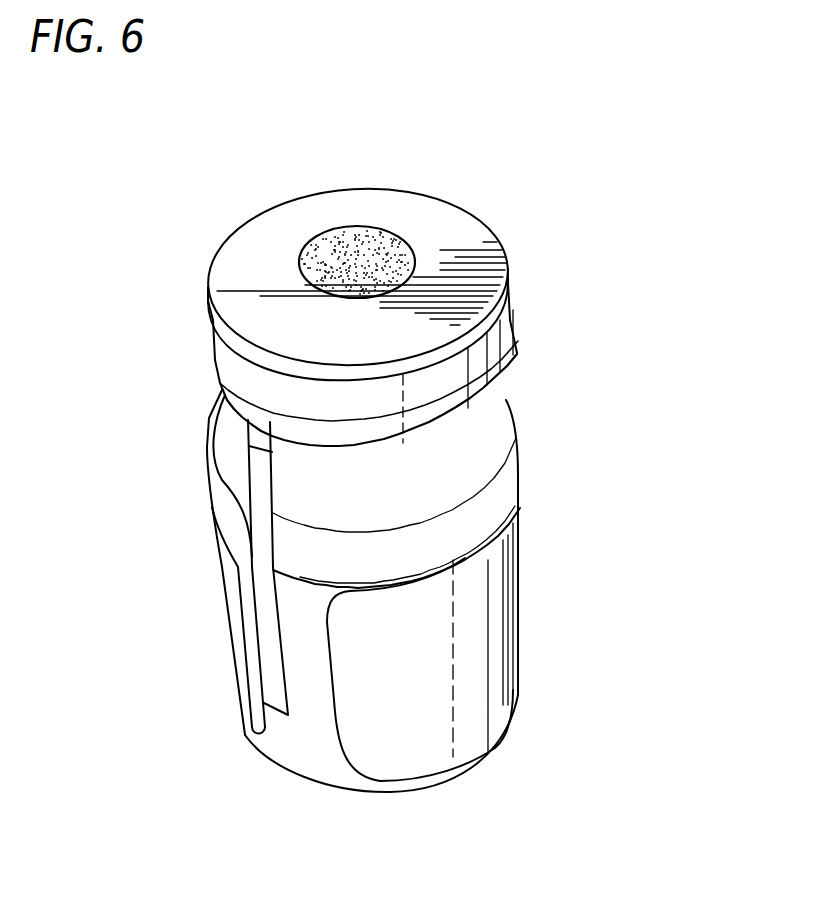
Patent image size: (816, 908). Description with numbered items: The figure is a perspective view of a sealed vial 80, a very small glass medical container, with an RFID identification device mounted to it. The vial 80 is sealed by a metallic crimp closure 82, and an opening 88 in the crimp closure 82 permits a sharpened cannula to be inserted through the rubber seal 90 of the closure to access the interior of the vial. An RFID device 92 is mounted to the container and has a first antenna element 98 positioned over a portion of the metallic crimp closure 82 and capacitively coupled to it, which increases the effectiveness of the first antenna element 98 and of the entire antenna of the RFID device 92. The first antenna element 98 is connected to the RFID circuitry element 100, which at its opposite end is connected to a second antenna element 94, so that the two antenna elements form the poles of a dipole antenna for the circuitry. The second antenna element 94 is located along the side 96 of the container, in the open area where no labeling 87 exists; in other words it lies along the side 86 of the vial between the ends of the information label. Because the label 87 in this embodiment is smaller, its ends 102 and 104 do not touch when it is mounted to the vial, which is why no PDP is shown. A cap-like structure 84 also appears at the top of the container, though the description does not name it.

The sealed vial 80 is at (168, 280).
The metallic crimp closure 82 is at (477, 267).
The cap 84 is at (420, 190).
The side 86 is at (497, 533).
The label 87 is at (440, 720).
The opening 88 is at (318, 238).
The rubber seal 90 is at (362, 250).
The RFID device 92 is at (230, 463).
The second antenna element 94 is at (267, 614).
The side 96 is at (293, 746).
The first antenna element 98 is at (470, 400).
The RFID circuitry element 100 is at (260, 432).
The label end 102 is at (253, 685).
The label end 104 is at (337, 710).